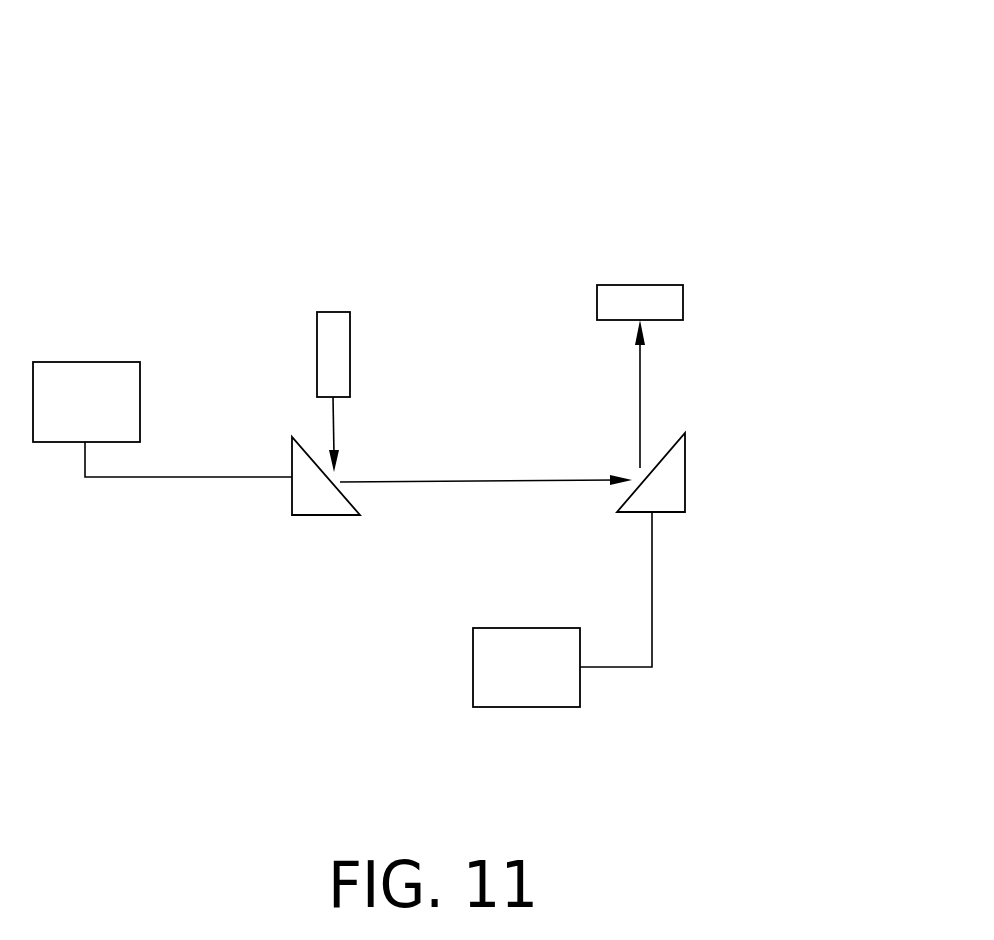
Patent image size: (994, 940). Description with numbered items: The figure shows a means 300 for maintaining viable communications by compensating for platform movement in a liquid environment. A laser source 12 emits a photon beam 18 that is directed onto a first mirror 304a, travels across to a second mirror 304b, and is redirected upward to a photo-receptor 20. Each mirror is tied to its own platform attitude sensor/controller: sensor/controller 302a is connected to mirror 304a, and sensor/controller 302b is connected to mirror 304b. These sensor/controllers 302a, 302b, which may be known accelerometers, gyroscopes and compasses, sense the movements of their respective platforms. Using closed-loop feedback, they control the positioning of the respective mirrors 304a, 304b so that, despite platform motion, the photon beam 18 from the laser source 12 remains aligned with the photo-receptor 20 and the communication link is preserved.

The movement compensating means 300 is at (240, 186).
The platform attitude sensor/controller 302a is at (83, 362).
The platform attitude sensor/controller 302b is at (473, 672).
The mirror 304a is at (292, 502).
The mirror 304b is at (685, 458).
The laser source 12 is at (352, 340).
The photon beam 18 is at (472, 482).
The photo-receptor 20 is at (650, 285).